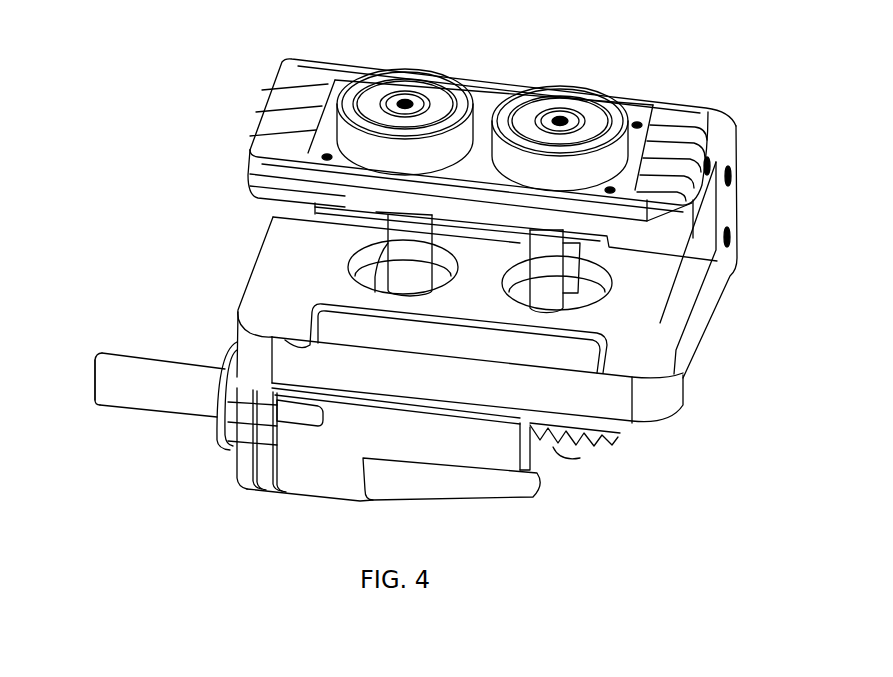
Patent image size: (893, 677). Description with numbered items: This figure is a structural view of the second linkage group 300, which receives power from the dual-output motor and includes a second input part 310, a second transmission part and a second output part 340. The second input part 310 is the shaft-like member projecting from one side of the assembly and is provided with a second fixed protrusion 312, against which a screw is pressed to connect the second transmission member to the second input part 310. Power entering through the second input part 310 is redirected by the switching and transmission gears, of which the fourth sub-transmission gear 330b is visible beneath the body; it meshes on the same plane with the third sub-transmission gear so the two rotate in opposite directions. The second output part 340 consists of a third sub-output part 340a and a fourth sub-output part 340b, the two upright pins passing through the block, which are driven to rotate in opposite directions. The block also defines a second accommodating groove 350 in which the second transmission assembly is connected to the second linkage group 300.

The second linkage group 300 is at (604, 79).
The second input part 310 is at (192, 383).
The second fixed protrusion 312 is at (96, 367).
The fourth sub-transmission gear 330b is at (578, 440).
The second output part 340 is at (163, 463).
The third sub-output part 340a is at (396, 250).
The fourth sub-output part 340b is at (547, 268).
The second accommodating groove 350 is at (652, 293).